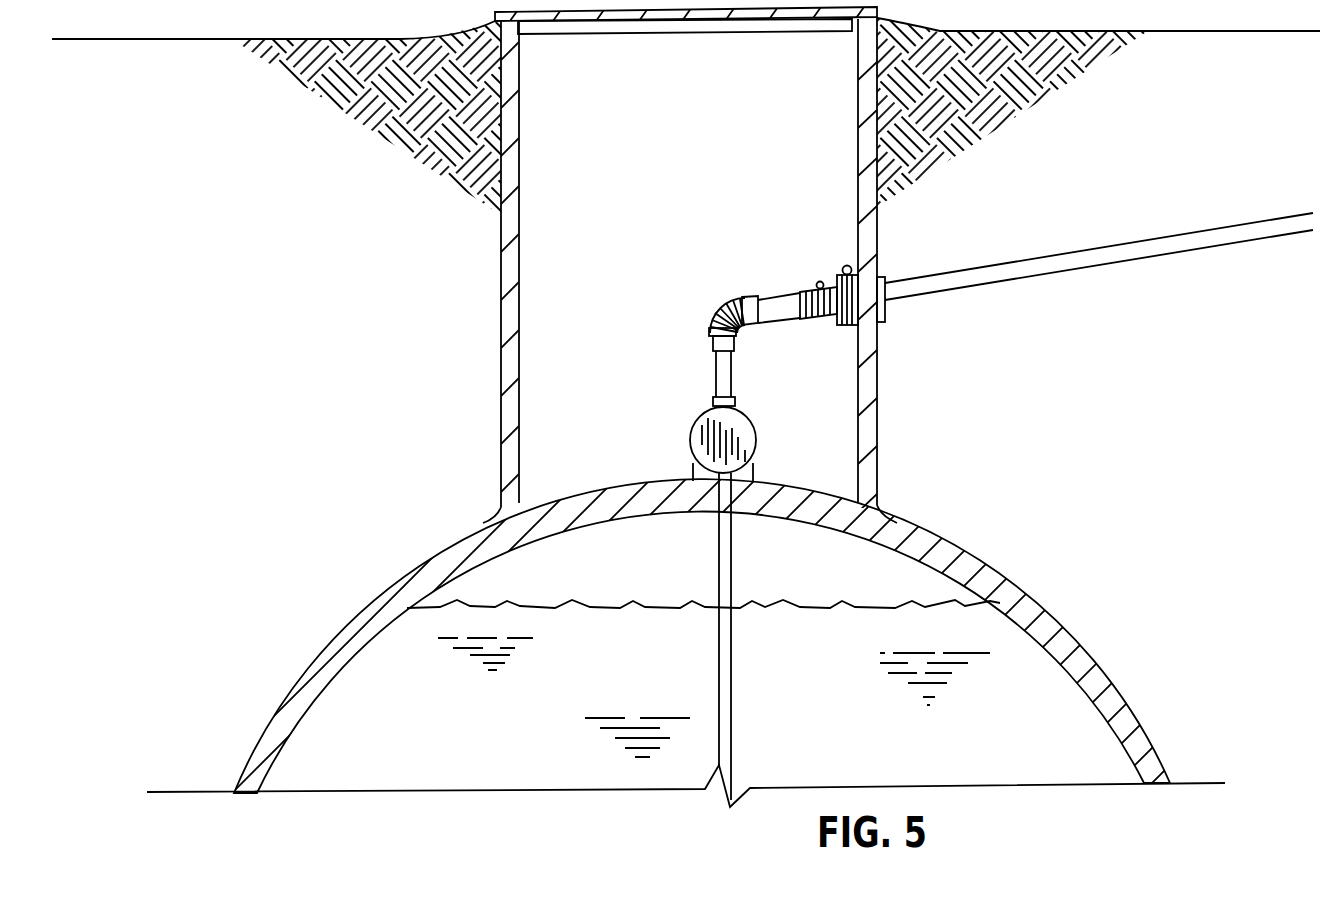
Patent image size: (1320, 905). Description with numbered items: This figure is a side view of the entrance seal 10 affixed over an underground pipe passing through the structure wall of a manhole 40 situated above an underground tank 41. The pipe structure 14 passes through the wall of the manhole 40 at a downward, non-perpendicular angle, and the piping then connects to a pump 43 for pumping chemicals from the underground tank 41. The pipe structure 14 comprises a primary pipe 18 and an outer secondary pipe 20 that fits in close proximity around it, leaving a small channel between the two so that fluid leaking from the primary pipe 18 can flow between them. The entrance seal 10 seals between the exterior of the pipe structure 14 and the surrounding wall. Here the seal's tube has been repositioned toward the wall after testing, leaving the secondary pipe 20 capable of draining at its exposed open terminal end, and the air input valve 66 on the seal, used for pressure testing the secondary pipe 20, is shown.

The entrance seal 10 is at (833, 278).
The pipe structure 14 is at (1093, 248).
The primary pipe 18 is at (768, 299).
The secondary pipe 20 is at (803, 320).
The manhole 40 is at (502, 253).
The underground tank 41 is at (987, 560).
The pump 43 is at (690, 435).
The air input valve 66 is at (817, 282).